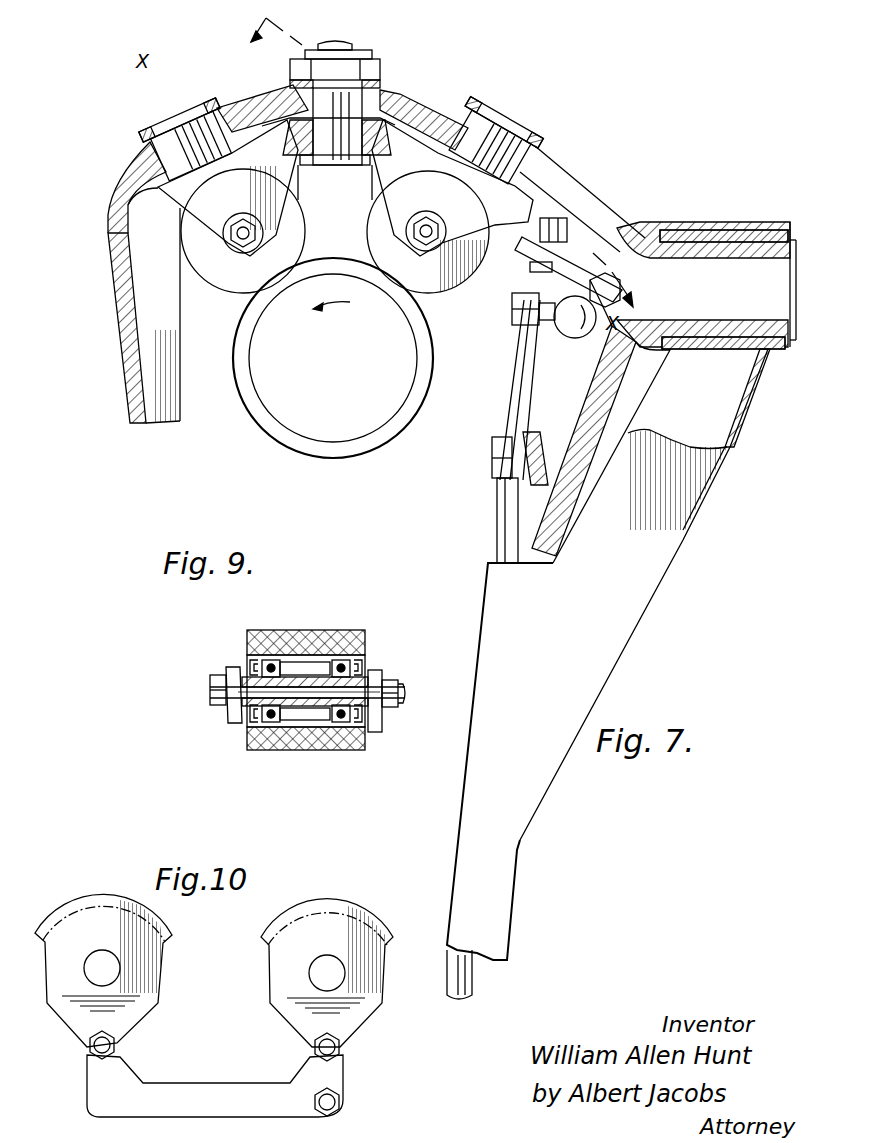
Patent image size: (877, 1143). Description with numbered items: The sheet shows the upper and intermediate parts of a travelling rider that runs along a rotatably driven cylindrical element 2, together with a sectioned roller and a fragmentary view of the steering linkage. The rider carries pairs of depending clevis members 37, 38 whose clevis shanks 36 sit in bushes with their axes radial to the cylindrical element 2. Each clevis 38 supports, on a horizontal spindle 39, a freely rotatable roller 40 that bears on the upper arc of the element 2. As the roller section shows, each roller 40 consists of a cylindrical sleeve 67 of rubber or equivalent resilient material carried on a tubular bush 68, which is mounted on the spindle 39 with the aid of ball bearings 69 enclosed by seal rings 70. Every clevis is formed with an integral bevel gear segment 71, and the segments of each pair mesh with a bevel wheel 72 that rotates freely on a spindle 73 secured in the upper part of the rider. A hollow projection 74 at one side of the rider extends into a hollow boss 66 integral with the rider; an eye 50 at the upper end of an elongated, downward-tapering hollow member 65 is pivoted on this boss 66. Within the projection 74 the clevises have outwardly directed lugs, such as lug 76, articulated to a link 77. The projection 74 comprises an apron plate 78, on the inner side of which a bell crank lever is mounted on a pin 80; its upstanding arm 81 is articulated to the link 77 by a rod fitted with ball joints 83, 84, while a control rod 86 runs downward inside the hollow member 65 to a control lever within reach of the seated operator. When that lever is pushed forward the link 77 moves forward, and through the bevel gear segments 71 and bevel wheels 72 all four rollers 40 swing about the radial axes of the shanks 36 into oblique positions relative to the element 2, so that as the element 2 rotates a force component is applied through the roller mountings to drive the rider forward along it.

In FIG. 7, the cylindrical driving element 2 is at (263, 422).
In FIG. 7, the clevis shank 36 is at (172, 140).
In FIG. 10, the clevis shank 36 is at (97, 958).
In FIG. 10, the clevis member 37 is at (381, 977).
In FIG. 7, the clevis member 38 is at (345, 188).
In FIG. 9, the clevis member 38 is at (240, 668).
In FIG. 10, the clevis member 38 is at (145, 993).
In FIG. 7, the spindle 39 is at (236, 237).
In FIG. 9, the spindle 39 is at (372, 690).
In FIG. 7, the roller 40 is at (232, 282).
In FIG. 9, the roller 40 is at (340, 626).
In FIG. 7, the eye 50 is at (714, 228).
In FIG. 7, the hollow member 65 is at (488, 873).
In FIG. 7, the hollow boss 66 is at (728, 320).
In FIG. 9, the cylindrical sleeve 67 is at (355, 748).
In FIG. 9, the tubular bush 68 is at (304, 667).
In FIG. 9, the ball bearings 69 is at (275, 748).
In FIG. 9, the seal rings 70 is at (364, 670).
In FIG. 7, the bevel gear segment 71 is at (300, 160).
In FIG. 10, the bevel gear segment 71 is at (60, 914).
In FIG. 7, the bevel wheel 72 is at (385, 110).
In FIG. 7, the spindle 73 is at (358, 100).
In FIG. 7, the hollow projection 74 is at (600, 224).
In FIG. 7, the lug 76 is at (553, 232).
In FIG. 7, the link 77 is at (556, 267).
In FIG. 10, the link 77 is at (200, 1084).
In FIG. 7, the apron plate 78 is at (560, 505).
In FIG. 7, the pin 80 is at (496, 478).
In FIG. 7, the upstanding arm 81 is at (528, 388).
In FIG. 7, the ball joint 83 is at (562, 322).
In FIG. 7, the ball joint 84 is at (578, 339).
In FIG. 7, the control rod 86 is at (500, 536).